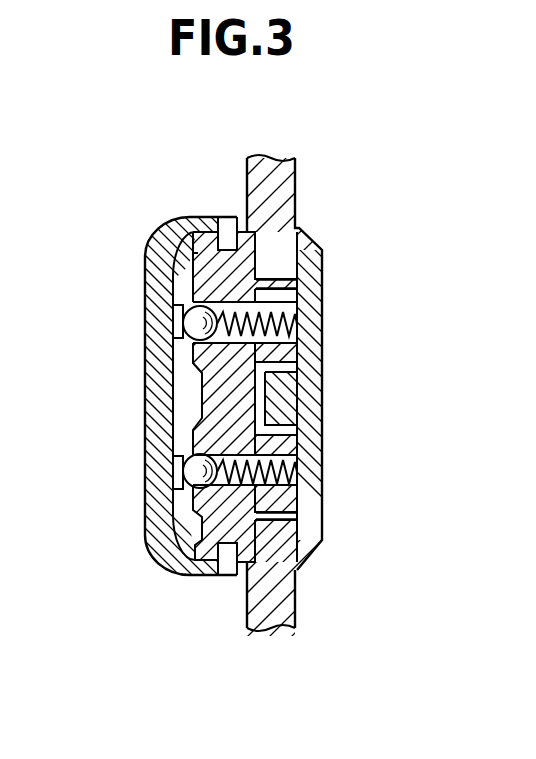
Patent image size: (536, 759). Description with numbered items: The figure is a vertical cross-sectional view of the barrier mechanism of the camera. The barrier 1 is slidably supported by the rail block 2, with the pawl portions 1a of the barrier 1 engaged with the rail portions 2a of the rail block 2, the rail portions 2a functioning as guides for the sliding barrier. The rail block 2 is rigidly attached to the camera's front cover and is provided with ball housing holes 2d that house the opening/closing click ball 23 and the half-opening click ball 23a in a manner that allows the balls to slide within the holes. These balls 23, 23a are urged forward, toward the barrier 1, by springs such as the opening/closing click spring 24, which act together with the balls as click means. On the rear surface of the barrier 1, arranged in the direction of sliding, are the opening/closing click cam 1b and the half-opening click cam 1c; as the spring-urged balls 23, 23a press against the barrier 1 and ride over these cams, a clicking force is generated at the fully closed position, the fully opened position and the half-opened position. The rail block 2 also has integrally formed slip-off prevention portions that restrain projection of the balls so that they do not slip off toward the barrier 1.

The barrier 1 is at (146, 264).
The pawl portions 1a is at (230, 242).
The opening/closing click cam 1b is at (184, 322).
The half-opening click cam 1c is at (184, 476).
The rail block 2 is at (296, 190).
The rail portions 2a is at (196, 236).
The ball housing holes 2d is at (297, 285).
The opening/closing click ball 23 is at (183, 311).
The half-opening click ball 23a is at (160, 523).
The opening/closing click spring 24 is at (297, 322).